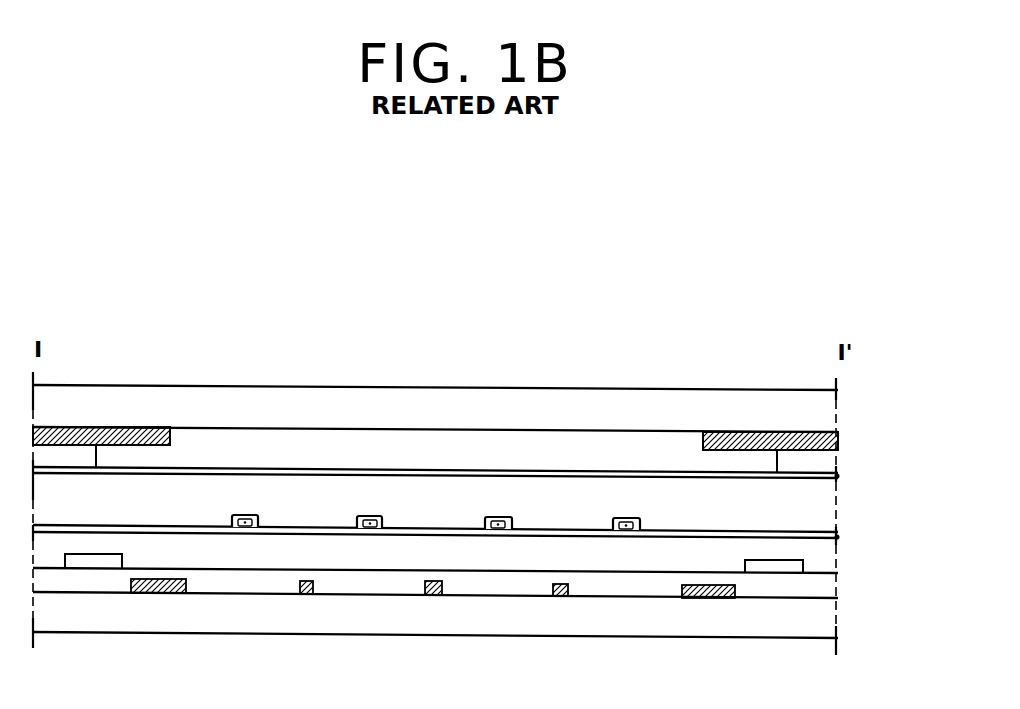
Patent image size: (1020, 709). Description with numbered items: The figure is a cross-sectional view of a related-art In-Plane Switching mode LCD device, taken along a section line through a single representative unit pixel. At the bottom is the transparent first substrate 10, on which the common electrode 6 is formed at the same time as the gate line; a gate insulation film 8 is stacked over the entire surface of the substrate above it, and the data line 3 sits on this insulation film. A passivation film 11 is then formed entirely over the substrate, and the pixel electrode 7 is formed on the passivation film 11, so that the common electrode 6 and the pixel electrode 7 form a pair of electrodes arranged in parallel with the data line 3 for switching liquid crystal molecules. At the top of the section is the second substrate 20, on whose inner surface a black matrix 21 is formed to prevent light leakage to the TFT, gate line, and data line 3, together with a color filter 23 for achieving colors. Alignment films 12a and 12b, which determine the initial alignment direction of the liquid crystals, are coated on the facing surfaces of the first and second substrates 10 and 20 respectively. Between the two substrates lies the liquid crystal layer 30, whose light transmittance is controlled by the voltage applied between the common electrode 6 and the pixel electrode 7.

The second substrate 20 is at (830, 410).
The black matrix 21 is at (735, 440).
The color filter 23 is at (606, 452).
The alignment film 12b is at (830, 478).
The liquid crystal layer 30 is at (830, 512).
The pixel electrode 7 is at (369, 528).
The alignment film 12a is at (830, 538).
The passivation film 11 is at (830, 558).
The data line 3 is at (95, 560).
The gate insulation film 8 is at (830, 587).
The common electrode 6 is at (155, 593).
The first substrate 10 is at (830, 618).